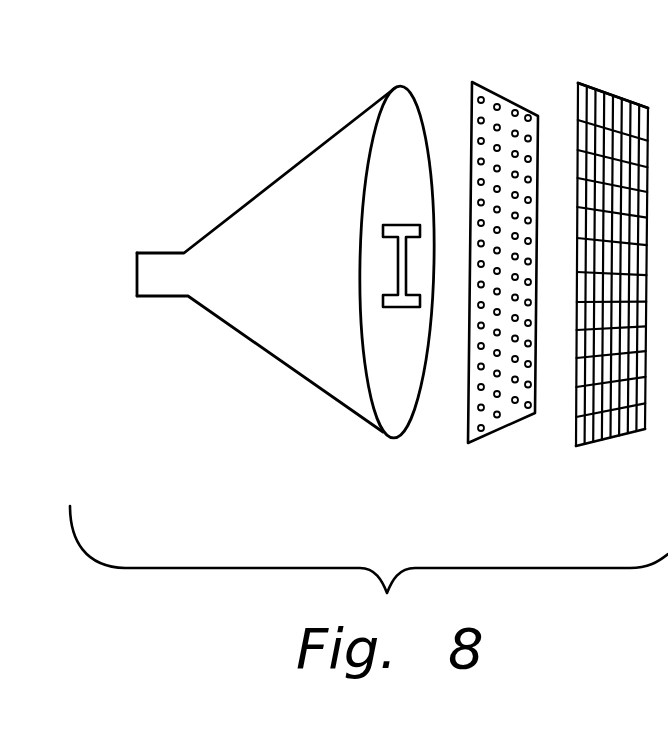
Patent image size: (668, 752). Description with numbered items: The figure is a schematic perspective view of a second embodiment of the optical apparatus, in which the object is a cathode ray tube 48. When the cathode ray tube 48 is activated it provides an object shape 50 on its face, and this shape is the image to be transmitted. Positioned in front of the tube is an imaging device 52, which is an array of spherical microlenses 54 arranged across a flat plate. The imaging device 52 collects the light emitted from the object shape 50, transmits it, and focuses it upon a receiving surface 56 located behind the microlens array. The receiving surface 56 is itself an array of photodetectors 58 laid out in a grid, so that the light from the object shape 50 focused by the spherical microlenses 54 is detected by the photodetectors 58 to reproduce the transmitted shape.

The cathode ray tube 48 is at (280, 364).
The object shape 50 is at (400, 224).
The imaging device 52 is at (500, 432).
The spherical microlenses 54 is at (528, 116).
The receiving surface 56 is at (610, 437).
The photodetectors 58 is at (597, 100).